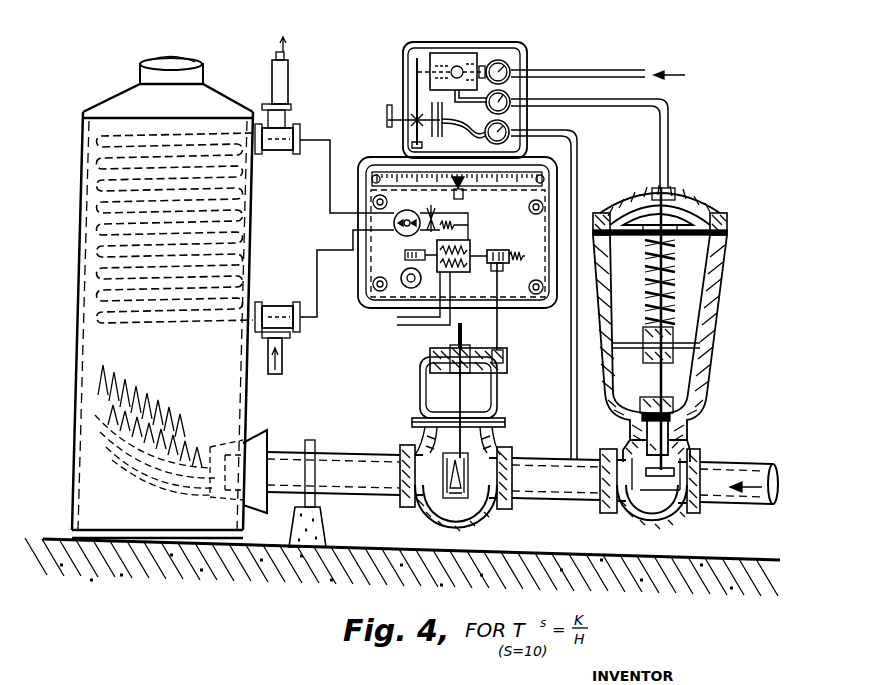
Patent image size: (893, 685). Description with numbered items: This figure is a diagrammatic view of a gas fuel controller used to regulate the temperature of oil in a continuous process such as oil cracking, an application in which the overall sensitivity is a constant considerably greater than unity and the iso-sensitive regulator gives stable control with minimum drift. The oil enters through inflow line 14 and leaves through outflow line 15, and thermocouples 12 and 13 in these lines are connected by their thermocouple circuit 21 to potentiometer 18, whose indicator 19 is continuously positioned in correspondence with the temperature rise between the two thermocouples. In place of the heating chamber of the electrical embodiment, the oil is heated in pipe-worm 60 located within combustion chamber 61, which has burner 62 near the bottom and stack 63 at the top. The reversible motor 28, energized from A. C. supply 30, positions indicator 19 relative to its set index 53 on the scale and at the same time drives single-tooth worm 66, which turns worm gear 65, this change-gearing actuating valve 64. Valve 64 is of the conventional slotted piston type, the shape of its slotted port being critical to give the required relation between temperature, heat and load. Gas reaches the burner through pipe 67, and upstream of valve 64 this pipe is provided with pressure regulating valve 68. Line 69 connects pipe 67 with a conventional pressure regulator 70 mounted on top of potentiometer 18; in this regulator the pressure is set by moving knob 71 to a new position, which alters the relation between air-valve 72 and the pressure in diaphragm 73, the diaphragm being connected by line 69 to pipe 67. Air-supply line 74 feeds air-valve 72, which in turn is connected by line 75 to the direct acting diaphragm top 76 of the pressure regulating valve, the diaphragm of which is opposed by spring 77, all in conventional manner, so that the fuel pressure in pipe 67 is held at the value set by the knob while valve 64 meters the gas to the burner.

The thermocouple 12 is at (270, 310).
The thermocouple 13 is at (275, 151).
The inflow line 14 is at (284, 360).
The outflow line 15 is at (290, 92).
The potentiometer 18 is at (369, 168).
The indicator 19 is at (463, 197).
The thermocouple circuit 21 is at (347, 228).
The reversible motor 28 is at (471, 256).
The A. C. supply 30 is at (408, 301).
The set index 53 is at (448, 172).
The pipe-worm 60 is at (98, 220).
The combustion chamber 61 is at (90, 334).
The burner 62 is at (245, 441).
The stack 63 is at (186, 66).
The valve 64 is at (470, 455).
The worm gear 65 is at (524, 257).
The single-tooth worm 66 is at (508, 254).
The pipe 67 is at (549, 482).
The pressure regulating valve 68 is at (682, 442).
The line 69 is at (571, 375).
The pressure regulator 70 is at (446, 43).
The knob 71 is at (388, 117).
The air-valve 72 is at (466, 56).
The diaphragm 73 is at (448, 137).
The air-supply line 74 is at (626, 58).
The line 75 is at (669, 148).
The direct acting diaphragm top 76 is at (715, 277).
The spring 77 is at (670, 314).